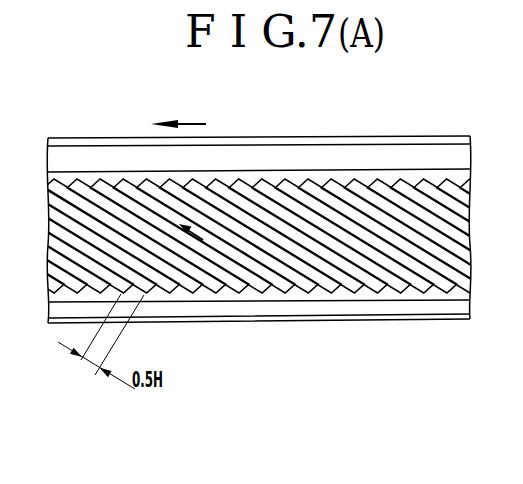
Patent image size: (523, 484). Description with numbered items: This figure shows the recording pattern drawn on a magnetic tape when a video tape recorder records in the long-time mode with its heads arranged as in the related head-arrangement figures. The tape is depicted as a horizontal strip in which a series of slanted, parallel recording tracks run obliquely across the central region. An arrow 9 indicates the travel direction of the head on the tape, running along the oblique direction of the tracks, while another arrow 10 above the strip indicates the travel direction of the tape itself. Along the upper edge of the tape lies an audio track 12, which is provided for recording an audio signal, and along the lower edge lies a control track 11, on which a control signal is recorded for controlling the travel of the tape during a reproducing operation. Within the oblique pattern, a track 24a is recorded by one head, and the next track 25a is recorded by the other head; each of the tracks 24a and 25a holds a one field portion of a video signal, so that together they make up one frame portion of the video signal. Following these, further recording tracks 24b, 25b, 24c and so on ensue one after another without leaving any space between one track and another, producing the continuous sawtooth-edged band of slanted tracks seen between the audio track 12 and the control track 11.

The arrow indicating head travel direction 9 is at (199, 239).
The arrow indicating tape travel direction 10 is at (202, 124).
The control track 11 is at (452, 312).
The audio track 12 is at (426, 149).
The recording track 24a is at (260, 292).
The recording track 24b is at (307, 292).
The recording track 24c is at (352, 292).
The recording track 25a is at (287, 292).
The recording track 25b is at (328, 292).